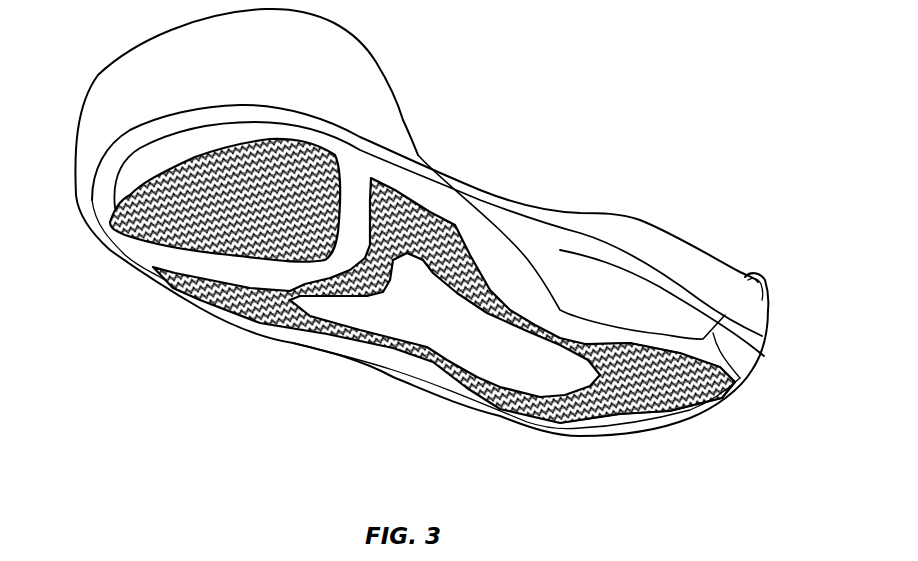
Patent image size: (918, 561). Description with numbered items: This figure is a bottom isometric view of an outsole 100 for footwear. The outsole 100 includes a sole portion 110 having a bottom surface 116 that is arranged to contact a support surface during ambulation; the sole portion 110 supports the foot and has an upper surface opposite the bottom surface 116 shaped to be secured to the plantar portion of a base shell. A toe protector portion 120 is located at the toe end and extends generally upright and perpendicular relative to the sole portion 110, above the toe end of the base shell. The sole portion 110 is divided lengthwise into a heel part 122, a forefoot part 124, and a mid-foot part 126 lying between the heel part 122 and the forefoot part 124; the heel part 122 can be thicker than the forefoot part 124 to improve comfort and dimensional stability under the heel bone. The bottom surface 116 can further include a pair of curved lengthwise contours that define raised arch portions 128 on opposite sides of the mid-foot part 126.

The outsole 100 is at (636, 123).
The sole portion 110 is at (467, 173).
The bottom surface 116 is at (193, 313).
The toe protector portion 120 is at (172, 73).
The heel part 122 is at (683, 397).
The forefoot part 124 is at (187, 227).
The mid-foot part 126 is at (467, 343).
The raised arch portion 128 is at (582, 284).